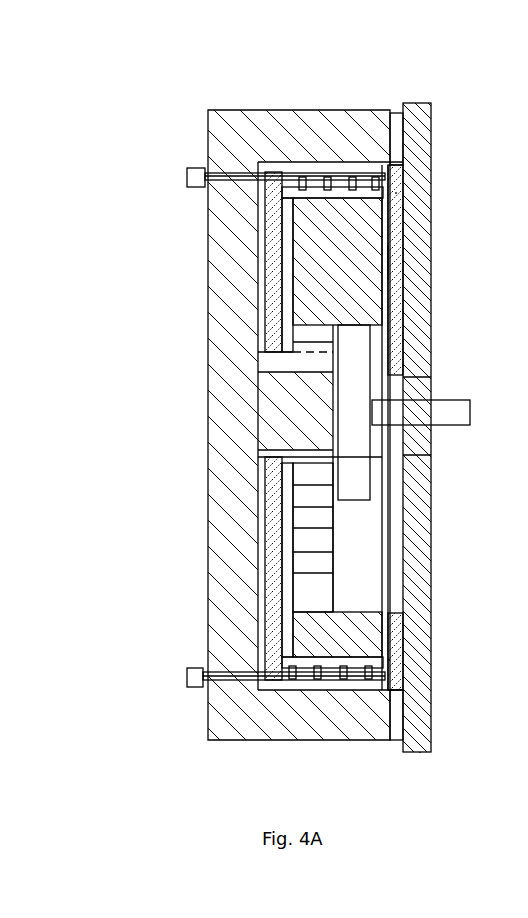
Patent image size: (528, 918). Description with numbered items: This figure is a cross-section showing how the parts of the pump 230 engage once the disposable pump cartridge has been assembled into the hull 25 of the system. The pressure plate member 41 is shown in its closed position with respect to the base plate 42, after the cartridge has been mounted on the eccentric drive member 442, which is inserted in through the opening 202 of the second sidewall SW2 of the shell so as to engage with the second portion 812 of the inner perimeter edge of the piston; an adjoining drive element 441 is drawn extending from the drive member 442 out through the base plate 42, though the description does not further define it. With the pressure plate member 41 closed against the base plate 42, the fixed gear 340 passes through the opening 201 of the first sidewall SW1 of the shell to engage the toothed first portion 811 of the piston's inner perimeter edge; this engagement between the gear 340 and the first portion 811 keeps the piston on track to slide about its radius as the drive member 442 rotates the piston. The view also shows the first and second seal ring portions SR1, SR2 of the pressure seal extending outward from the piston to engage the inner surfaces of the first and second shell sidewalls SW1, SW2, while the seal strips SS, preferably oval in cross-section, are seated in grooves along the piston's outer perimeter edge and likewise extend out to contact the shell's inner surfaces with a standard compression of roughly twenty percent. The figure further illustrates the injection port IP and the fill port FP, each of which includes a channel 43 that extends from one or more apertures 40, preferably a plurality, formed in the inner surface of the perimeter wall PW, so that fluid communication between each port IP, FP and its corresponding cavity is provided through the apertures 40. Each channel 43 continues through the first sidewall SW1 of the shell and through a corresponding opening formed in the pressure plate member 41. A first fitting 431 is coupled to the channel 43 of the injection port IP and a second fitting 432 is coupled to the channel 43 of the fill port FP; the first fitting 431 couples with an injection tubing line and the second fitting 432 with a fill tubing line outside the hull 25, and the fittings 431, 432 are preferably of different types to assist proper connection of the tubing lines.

The pump 230 is at (146, 121).
The first fitting 431 is at (187, 186).
The second fitting 432 is at (190, 670).
The channel 43 is at (252, 172).
The perimeter wall PW is at (288, 172).
The apertures 40 is at (375, 177).
The seal strips SS is at (398, 192).
The second sidewall SW2 is at (392, 226).
The second seal ring portion SR2 is at (394, 262).
The first sidewall SW1 is at (272, 296).
The first seal ring portion SR1 is at (284, 224).
The opening 201 is at (279, 352).
The opening 202 is at (399, 579).
The fixed gear 340 is at (260, 441).
The pressure plate member 41 is at (250, 589).
The base plate 42 is at (412, 629).
The first portion of the inner perimeter edge 811 is at (303, 473).
The second portion of the inner perimeter edge 812 is at (353, 611).
The arm 441 is at (453, 404).
The eccentric drive member 442 is at (360, 373).
The hull 25 is at (420, 752).
The injection port IP is at (203, 163).
The fill port FP is at (202, 705).